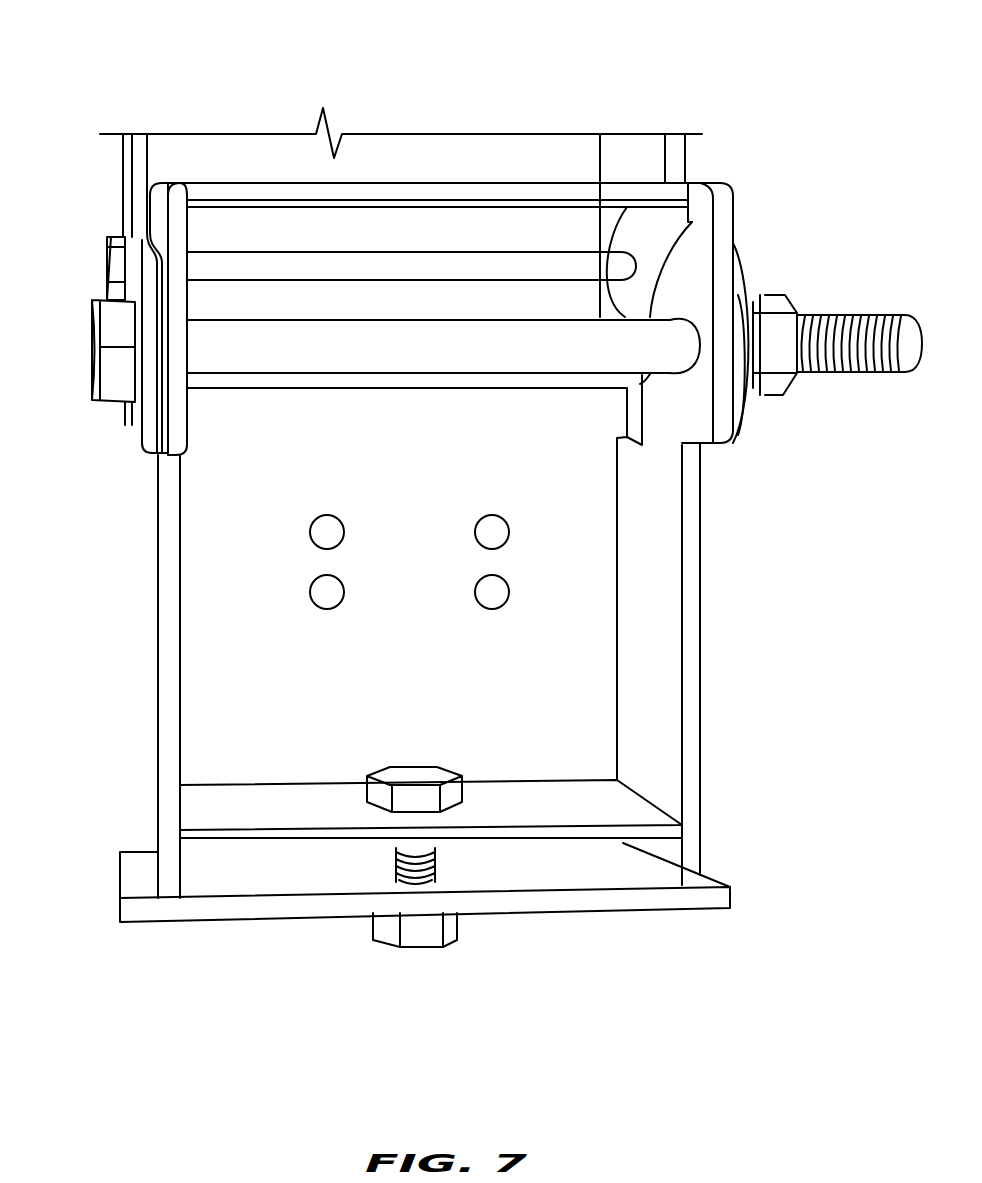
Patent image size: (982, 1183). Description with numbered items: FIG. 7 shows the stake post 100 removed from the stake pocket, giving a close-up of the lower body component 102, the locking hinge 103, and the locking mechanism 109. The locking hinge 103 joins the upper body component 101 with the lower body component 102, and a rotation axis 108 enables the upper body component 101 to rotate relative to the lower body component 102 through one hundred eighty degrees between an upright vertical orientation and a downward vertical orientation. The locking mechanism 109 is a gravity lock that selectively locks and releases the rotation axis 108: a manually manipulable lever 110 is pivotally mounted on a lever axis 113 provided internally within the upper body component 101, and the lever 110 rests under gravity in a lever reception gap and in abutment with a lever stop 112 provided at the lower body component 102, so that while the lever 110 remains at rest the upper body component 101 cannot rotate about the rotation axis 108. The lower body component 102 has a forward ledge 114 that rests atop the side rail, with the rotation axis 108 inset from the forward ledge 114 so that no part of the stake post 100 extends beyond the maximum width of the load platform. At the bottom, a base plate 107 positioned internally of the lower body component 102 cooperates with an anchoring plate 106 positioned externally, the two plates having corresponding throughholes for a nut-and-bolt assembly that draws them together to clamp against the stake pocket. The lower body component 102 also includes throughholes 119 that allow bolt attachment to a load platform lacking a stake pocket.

The stake post 100 is at (360, 78).
The upper body component 101 is at (130, 197).
The lower body component 102 is at (653, 665).
The locking hinge 103 is at (66, 377).
The anchoring plate 106 is at (247, 905).
The base plate 107 is at (560, 803).
The rotation axis 108 is at (287, 365).
The locking mechanism 109 is at (805, 298).
The lever 110 is at (635, 192).
The lever stop 112 is at (703, 198).
The lever axis 113 is at (617, 265).
The forward ledge 114 is at (717, 445).
The throughholes 119 is at (328, 612).